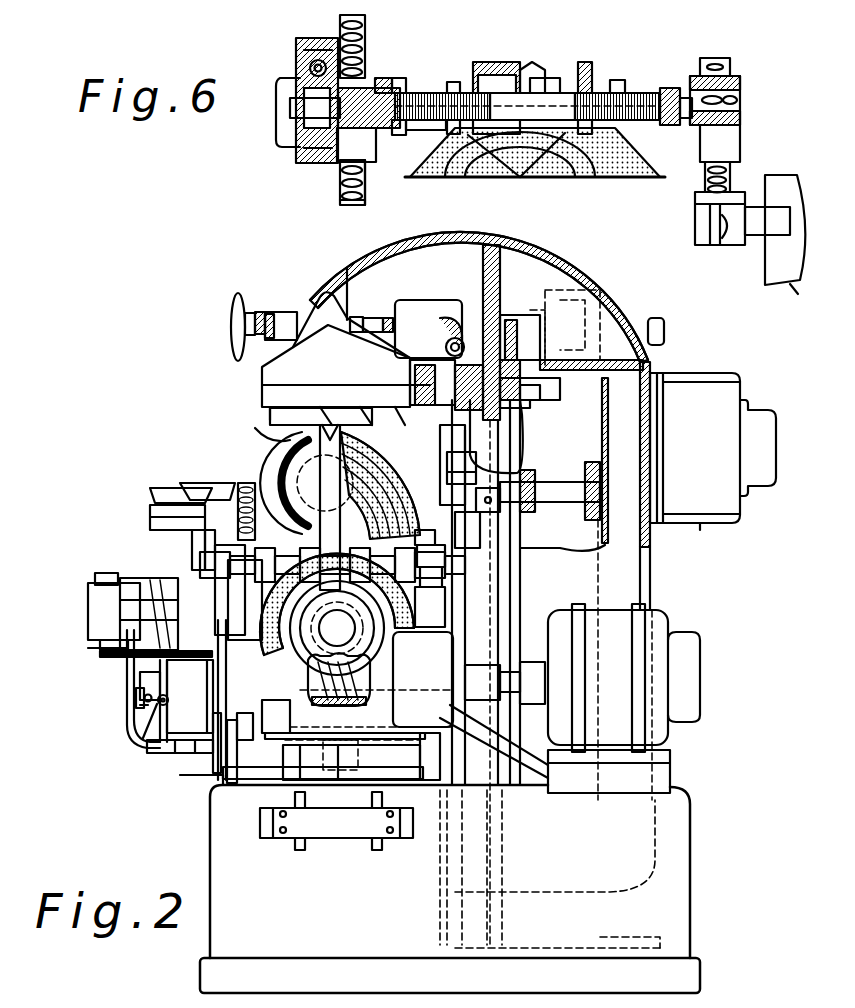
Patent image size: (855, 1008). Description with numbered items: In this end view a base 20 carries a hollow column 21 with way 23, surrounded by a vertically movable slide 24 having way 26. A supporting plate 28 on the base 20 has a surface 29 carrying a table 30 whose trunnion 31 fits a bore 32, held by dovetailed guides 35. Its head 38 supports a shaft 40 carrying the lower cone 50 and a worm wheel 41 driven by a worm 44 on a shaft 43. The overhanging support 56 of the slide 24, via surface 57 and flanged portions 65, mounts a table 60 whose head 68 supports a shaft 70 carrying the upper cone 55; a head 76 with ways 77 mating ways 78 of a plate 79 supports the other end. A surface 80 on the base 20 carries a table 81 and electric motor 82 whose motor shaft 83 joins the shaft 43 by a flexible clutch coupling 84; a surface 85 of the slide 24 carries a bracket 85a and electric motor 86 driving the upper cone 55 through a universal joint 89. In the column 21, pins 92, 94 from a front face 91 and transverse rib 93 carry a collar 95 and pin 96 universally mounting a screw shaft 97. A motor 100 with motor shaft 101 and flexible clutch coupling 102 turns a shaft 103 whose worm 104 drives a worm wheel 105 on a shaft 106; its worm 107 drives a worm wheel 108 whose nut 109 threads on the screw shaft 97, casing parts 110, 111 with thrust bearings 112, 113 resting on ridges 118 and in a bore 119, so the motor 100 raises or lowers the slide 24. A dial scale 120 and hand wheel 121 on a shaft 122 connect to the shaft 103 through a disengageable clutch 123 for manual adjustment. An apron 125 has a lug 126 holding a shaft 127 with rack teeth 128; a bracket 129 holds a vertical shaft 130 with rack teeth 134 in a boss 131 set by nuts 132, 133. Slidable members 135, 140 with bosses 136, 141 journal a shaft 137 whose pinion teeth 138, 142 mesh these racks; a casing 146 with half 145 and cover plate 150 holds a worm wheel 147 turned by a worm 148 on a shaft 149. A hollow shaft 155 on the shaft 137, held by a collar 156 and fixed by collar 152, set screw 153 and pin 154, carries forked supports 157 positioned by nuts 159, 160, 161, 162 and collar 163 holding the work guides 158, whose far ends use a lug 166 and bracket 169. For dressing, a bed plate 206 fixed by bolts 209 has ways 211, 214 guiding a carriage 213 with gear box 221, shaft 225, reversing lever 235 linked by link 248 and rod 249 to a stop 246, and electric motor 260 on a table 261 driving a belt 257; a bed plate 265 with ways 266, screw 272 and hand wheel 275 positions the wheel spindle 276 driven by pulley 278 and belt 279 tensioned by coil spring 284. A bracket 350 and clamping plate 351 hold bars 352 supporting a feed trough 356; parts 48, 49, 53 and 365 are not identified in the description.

In FIG. 2, the base 20 is at (690, 903).
In FIG. 6, the column 21 is at (776, 185).
In FIG. 2, the column 21 is at (638, 935).
In FIG. 6, the vertical way 23 is at (789, 296).
In FIG. 2, the vertical way 23 is at (525, 440).
In FIG. 2, the vertically movable slide 24 is at (648, 556).
In FIG. 2, the way 26 is at (470, 592).
In FIG. 2, the supporting plate 28 is at (240, 780).
In FIG. 2, the horizontal upper surface 29 is at (276, 782).
In FIG. 2, the table 30 is at (290, 730).
In FIG. 2, the trunnion 31 is at (360, 765).
In FIG. 2, the bore 32 is at (338, 782).
In FIG. 2, the dovetailed overlapping guides 35 is at (300, 746).
In FIG. 6, the head 38 is at (530, 160).
In FIG. 2, the head 38 is at (392, 652).
In FIG. 2, the shaft 40 is at (337, 628).
In FIG. 2, the worm wheel 41 is at (337, 628).
In FIG. 2, the shaft 43 is at (360, 686).
In FIG. 2, the worm 44 is at (310, 690).
In FIG. 2, the clamp base 48 is at (330, 702).
In FIG. 2, the slide member 49 is at (406, 712).
In FIG. 6, the lower cone 50 is at (632, 152).
In FIG. 2, the lower cone 50 is at (402, 625).
In FIG. 6, the wheel rim 53 is at (590, 168).
In FIG. 2, the upper cone 55 is at (272, 472).
In FIG. 2, the overhanging support 56 is at (312, 300).
In FIG. 2, the flat plain surface 57 is at (304, 386).
In FIG. 2, the table 60 is at (332, 416).
In FIG. 2, the flanged supporting portions 65 is at (344, 386).
In FIG. 2, the head 68 is at (398, 420).
In FIG. 2, the shaft 70 is at (312, 490).
In FIG. 2, the head 76 is at (320, 466).
In FIG. 2, the dovetailed ways 77 is at (270, 418).
In FIG. 2, the ways 78 is at (282, 410).
In FIG. 2, the plate 79 is at (366, 412).
In FIG. 2, the flat horizontal upper surface 80 is at (592, 765).
In FIG. 2, the table 81 is at (670, 755).
In FIG. 2, the electric motor 82 is at (700, 680).
In FIG. 2, the motor shaft 83 is at (520, 680).
In FIG. 2, the flexible clutch coupling 84 is at (518, 690).
In FIG. 2, the vertical flat surface 85 is at (663, 490).
In FIG. 2, the bracket 85a is at (728, 505).
In FIG. 2, the electric motor 86 is at (766, 476).
In FIG. 2, the universal joint 89 is at (470, 442).
In FIG. 2, the front face 91 is at (455, 458).
In FIG. 2, the pin 92 is at (455, 477).
In FIG. 2, the transverse rib 93 is at (545, 504).
In FIG. 2, the pin 94 is at (556, 484).
In FIG. 2, the collar 95 is at (480, 530).
In FIG. 2, the pin 96 is at (498, 506).
In FIG. 2, the screw shaft 97 is at (500, 258).
In FIG. 2, the motor 100 is at (658, 335).
In FIG. 2, the motor shaft 101 is at (552, 292).
In FIG. 2, the flexible clutch coupling 102 is at (556, 288).
In FIG. 2, the shaft 103 is at (380, 318).
In FIG. 2, the worm 104 is at (455, 330).
In FIG. 2, the worm wheel 105 is at (436, 318).
In FIG. 2, the shaft 106 is at (440, 352).
In FIG. 2, the worm 107 is at (435, 384).
In FIG. 2, the worm wheel 108 is at (540, 386).
In FIG. 2, the nut 109 is at (516, 396).
In FIG. 2, the upper casing part 110 is at (550, 335).
In FIG. 2, the lower casing part 111 is at (522, 406).
In FIG. 2, the lower thrust bearing 112 is at (456, 405).
In FIG. 2, the upper thrust bearing 113 is at (510, 328).
In FIG. 2, the supporting ridges 118 is at (400, 386).
In FIG. 2, the bore 119 is at (542, 396).
In FIG. 2, the dial scale 120 is at (278, 316).
In FIG. 2, the hand wheel 121 is at (232, 305).
In FIG. 2, the shaft 122 is at (358, 316).
In FIG. 2, the disengageable clutch 123 is at (368, 334).
In FIG. 2, the apron 125 is at (216, 772).
In FIG. 2, the lug 126 is at (245, 592).
In FIG. 6, the shaft 127 is at (340, 196).
In FIG. 2, the shaft 127 is at (245, 488).
In FIG. 6, the rack teeth 128 is at (362, 185).
In FIG. 2, the rack teeth 128 is at (200, 490).
In FIG. 6, the bracket 129 is at (755, 232).
In FIG. 2, the bracket 129 is at (470, 634).
In FIG. 6, the vertical shaft 130 is at (732, 62).
In FIG. 2, the vertical shaft 130 is at (470, 576).
In FIG. 6, the boss 131 is at (696, 240).
In FIG. 6, the nut 132 is at (716, 245).
In FIG. 6, the nut 133 is at (696, 200).
In FIG. 6, the rack teeth 134 is at (705, 175).
In FIG. 6, the slidable member 135 is at (742, 140).
In FIG. 2, the slidable member 135 is at (470, 558).
In FIG. 6, the boss 136 is at (742, 88).
In FIG. 2, the boss 136 is at (425, 545).
In FIG. 6, the shaft 137 is at (292, 114).
In FIG. 6, the pinion teeth 138 is at (742, 108).
In FIG. 6, the slidable member 140 is at (345, 175).
In FIG. 6, the boss 141 is at (352, 140).
In FIG. 6, the pinion teeth 142 is at (398, 164).
In FIG. 6, the casing half 145 is at (345, 38).
In FIG. 6, the casing 146 is at (300, 44).
In FIG. 2, the casing 146 is at (222, 570).
In FIG. 6, the worm wheel 147 is at (300, 148).
In FIG. 6, the worm 148 is at (300, 55).
In FIG. 6, the shaft 149 is at (310, 68).
In FIG. 6, the cover plate 150 is at (280, 100).
In FIG. 6, the collar 152 is at (404, 125).
In FIG. 2, the collar 152 is at (255, 548).
In FIG. 6, the set screw 153 is at (383, 78).
In FIG. 6, the pin 154 is at (400, 80).
In FIG. 6, the hollow shaft 155 is at (425, 95).
In FIG. 2, the hollow shaft 155 is at (425, 560).
In FIG. 6, the collar 156 is at (668, 88).
In FIG. 6, the forked supports 157 is at (478, 64).
In FIG. 6, the work guides 158 is at (500, 66).
In FIG. 6, the nut 159 is at (452, 82).
In FIG. 6, the nut 160 is at (505, 152).
In FIG. 6, the nut 161 is at (618, 80).
In FIG. 6, the nut 162 is at (470, 150).
In FIG. 6, the collar 163 is at (550, 78).
In FIG. 2, the lug 166 is at (244, 728).
In FIG. 2, the bracket 169 is at (430, 775).
In FIG. 2, the bed plate 206 is at (186, 776).
In FIG. 2, the bolts 209 is at (208, 650).
In FIG. 2, the way 211 is at (205, 690).
In FIG. 2, the carriage 213 is at (192, 755).
In FIG. 2, the way 214 is at (190, 700).
In FIG. 2, the gear box 221 is at (140, 745).
In FIG. 2, the shaft 225 is at (172, 748).
In FIG. 2, the reversing lever 235 is at (126, 676).
In FIG. 2, the dog or stop 246 is at (156, 632).
In FIG. 2, the link 248 is at (134, 690).
In FIG. 2, the rod 249 is at (143, 700).
In FIG. 2, the belt 257 is at (156, 612).
In FIG. 2, the electric motor 260 is at (90, 600).
In FIG. 2, the table 261 is at (110, 648).
In FIG. 2, the bed plate 265 is at (185, 525).
In FIG. 2, the stationary ways 266 is at (185, 512).
In FIG. 2, the screw 272 is at (195, 540).
In FIG. 2, the hand wheel 275 is at (185, 495).
In FIG. 2, the wheel spindle 276 is at (195, 557).
In FIG. 2, the pulley 278 is at (156, 596).
In FIG. 2, the belt 279 is at (160, 578).
In FIG. 2, the coil spring 284 is at (96, 590).
In FIG. 2, the bracket 350 is at (268, 840).
In FIG. 2, the grooved clamping plate 351 is at (284, 832).
In FIG. 2, the removable bars 352 is at (377, 850).
In FIG. 2, the feed trough 356 is at (255, 440).
In FIG. 6, the spacer 365 is at (532, 62).